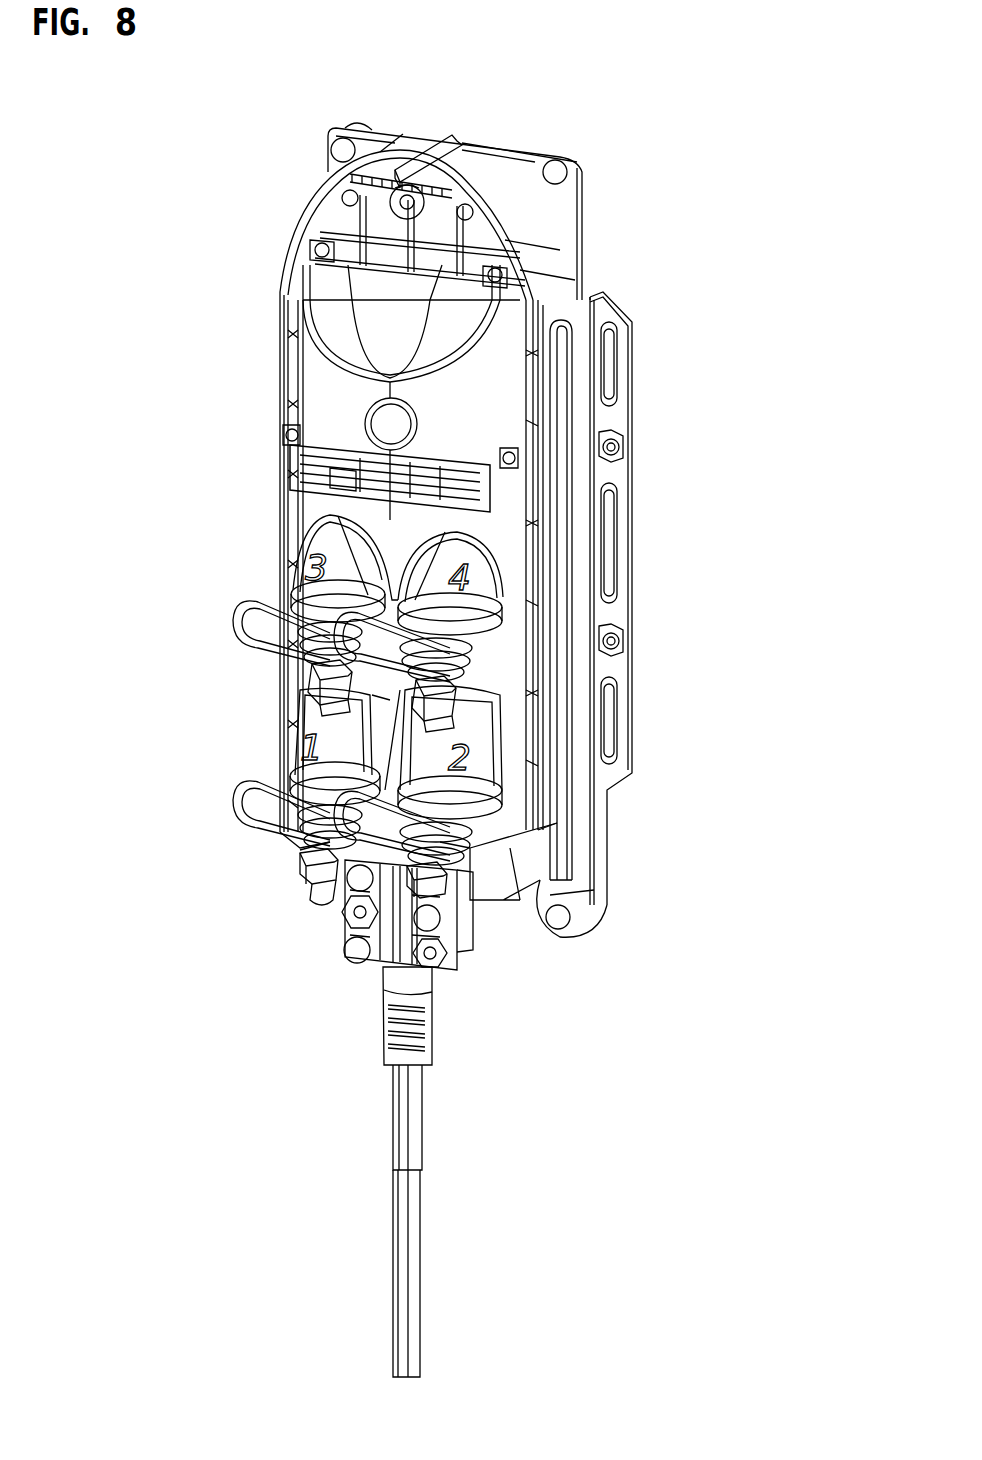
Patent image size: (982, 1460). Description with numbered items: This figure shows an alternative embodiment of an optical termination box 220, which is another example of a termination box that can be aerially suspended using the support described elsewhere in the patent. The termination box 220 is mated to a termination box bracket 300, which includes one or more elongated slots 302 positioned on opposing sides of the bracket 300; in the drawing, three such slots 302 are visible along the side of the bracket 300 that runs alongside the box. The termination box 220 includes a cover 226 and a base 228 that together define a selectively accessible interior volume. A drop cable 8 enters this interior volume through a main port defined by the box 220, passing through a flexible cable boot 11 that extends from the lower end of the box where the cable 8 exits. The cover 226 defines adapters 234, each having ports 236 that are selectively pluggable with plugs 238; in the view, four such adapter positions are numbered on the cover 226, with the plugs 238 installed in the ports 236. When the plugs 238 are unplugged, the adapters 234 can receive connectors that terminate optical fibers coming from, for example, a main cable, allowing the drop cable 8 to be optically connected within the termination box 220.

The optical termination box 220 is at (242, 238).
The cover 226 is at (310, 370).
The base 228 is at (480, 240).
The adapters 234 is at (303, 645).
The ports 236 is at (350, 663).
The plugs 238 is at (322, 700).
The termination box bracket 300 is at (630, 317).
The elongated slots 302 is at (612, 380).
The flexible cable boot 11 is at (421, 1036).
The drop cable 8 is at (420, 1212).